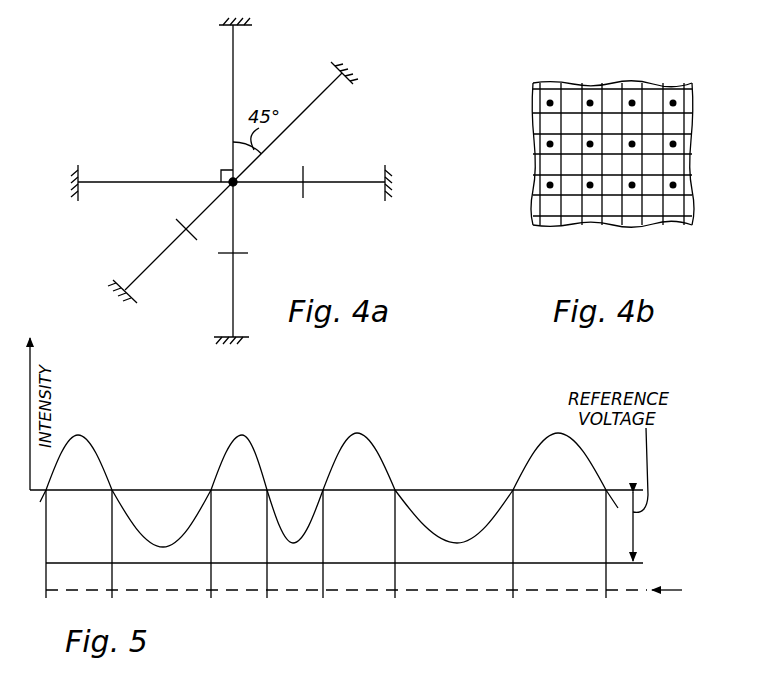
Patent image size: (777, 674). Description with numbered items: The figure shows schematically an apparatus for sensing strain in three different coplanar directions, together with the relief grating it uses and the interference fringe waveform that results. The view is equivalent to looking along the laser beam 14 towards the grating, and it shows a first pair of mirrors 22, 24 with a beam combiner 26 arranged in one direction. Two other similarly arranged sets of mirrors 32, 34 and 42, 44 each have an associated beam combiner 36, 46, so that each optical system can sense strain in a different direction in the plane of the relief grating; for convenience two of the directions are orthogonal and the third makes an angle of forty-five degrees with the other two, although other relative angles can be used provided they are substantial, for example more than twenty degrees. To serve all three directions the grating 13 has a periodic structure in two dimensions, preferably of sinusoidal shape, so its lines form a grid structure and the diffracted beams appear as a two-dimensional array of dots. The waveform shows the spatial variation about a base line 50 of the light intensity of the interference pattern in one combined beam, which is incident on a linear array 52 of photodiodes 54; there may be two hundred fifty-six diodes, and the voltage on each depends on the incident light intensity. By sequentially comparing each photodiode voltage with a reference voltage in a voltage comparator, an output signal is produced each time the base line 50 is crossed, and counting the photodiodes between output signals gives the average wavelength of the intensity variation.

In FIG. 4B, the grating 13 is at (566, 234).
In FIG. 4A, the laser beam 14 is at (236, 186).
In FIG. 4A, the mirror 22 is at (225, 29).
In FIG. 4A, the mirror 24 is at (226, 337).
In FIG. 4A, the beam combiner 26 is at (244, 252).
In FIG. 4A, the mirror 32 is at (82, 178).
In FIG. 4A, the mirror 34 is at (385, 172).
In FIG. 4A, the beam combiner 36 is at (304, 174).
In FIG. 4A, the mirror 42 is at (350, 80).
In FIG. 4A, the mirror 44 is at (126, 282).
In FIG. 4A, the beam combiner 46 is at (178, 230).
In FIG. 5, the base line 50 is at (617, 489).
In FIG. 5, the linear array 52 is at (672, 589).
In FIG. 5, the photodiodes 54 is at (556, 590).